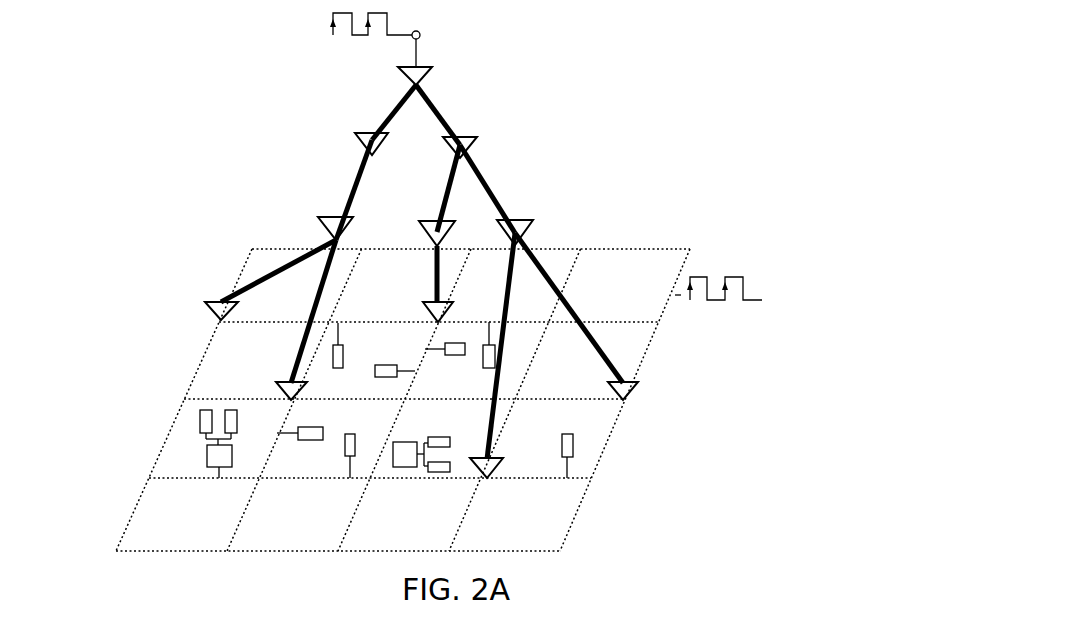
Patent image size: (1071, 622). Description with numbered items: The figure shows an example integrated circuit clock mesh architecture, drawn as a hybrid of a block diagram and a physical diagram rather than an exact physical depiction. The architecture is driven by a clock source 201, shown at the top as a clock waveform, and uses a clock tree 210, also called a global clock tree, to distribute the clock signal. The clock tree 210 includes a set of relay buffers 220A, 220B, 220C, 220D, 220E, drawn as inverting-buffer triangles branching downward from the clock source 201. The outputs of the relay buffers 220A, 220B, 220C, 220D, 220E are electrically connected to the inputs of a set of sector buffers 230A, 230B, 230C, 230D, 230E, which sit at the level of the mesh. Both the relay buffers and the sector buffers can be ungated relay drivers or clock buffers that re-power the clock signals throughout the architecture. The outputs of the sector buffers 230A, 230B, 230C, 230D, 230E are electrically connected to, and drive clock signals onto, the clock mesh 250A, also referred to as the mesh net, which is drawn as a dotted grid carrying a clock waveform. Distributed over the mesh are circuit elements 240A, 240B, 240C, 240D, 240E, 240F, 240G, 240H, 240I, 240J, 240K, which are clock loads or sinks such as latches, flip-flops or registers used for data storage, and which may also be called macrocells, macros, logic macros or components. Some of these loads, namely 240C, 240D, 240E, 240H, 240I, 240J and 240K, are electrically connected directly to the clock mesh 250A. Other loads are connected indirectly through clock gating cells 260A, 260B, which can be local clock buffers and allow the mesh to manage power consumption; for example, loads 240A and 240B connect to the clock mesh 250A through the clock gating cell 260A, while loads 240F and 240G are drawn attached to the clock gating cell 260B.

The clock source 201 is at (424, 74).
The clock tree 210 is at (395, 108).
The relay buffer 220A is at (355, 133).
The relay buffer 220B is at (474, 137).
The relay buffer 220C is at (318, 217).
The relay buffer 220D is at (439, 220).
The relay buffer 220E is at (513, 220).
The sector buffer 230A is at (220, 302).
The sector buffer 230B is at (289, 381).
The sector buffer 230C is at (442, 300).
The sector buffer 230D is at (636, 382).
The sector buffer 230E is at (488, 478).
The circuit element 240A is at (200, 414).
The circuit element 240B is at (229, 410).
The circuit element 240C is at (343, 345).
The circuit element 240D is at (306, 427).
The circuit element 240E is at (346, 456).
The circuit element 240F is at (431, 437).
The circuit element 240G is at (439, 472).
The circuit element 240H is at (382, 365).
The circuit element 240I is at (495, 360).
The circuit element 240J is at (465, 349).
The circuit element 240K is at (572, 434).
The clock mesh 250A is at (694, 250).
The clock gating cell 260A is at (207, 455).
The clock gating cell 260B is at (408, 467).